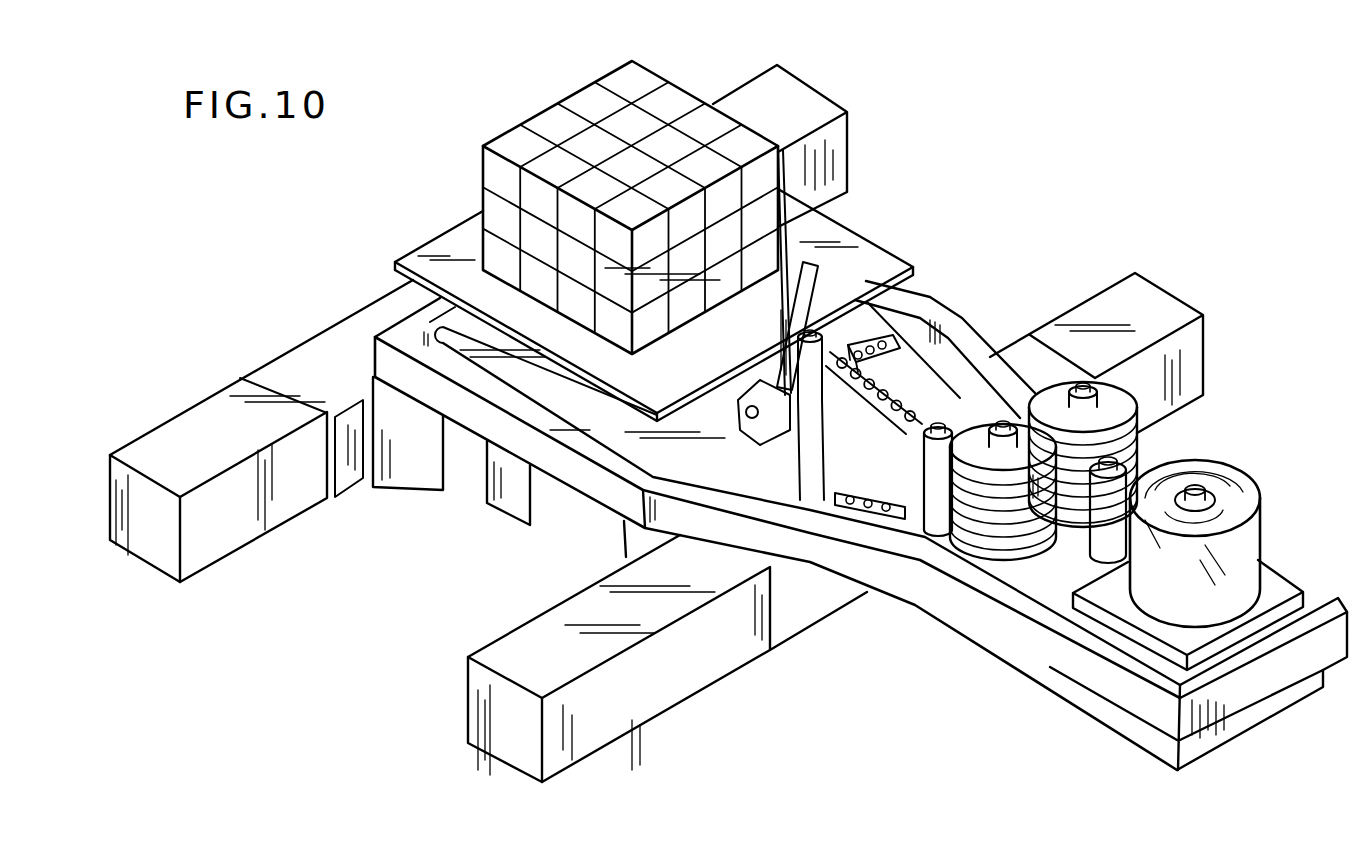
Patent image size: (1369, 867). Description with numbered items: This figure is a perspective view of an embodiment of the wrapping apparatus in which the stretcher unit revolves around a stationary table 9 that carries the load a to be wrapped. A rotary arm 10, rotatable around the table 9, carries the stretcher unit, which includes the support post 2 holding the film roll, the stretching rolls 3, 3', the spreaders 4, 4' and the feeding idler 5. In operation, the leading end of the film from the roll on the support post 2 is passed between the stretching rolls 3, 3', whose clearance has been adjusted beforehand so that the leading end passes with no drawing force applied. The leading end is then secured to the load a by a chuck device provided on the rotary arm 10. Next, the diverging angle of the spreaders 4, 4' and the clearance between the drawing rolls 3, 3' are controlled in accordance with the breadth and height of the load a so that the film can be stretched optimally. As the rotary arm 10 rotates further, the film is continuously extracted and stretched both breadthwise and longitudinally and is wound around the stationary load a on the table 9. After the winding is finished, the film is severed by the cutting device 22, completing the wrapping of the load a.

The load a is at (555, 120).
The table 9 is at (446, 252).
The rotary arm 10 is at (932, 592).
The feeding idler 5 is at (822, 303).
The cutting device 22 is at (887, 343).
The spreader 4 is at (893, 393).
The spreader 4' is at (870, 477).
The stretching roll 3' is at (1025, 419).
The stretching roll 3 is at (1083, 387).
The support post 2 is at (1195, 495).